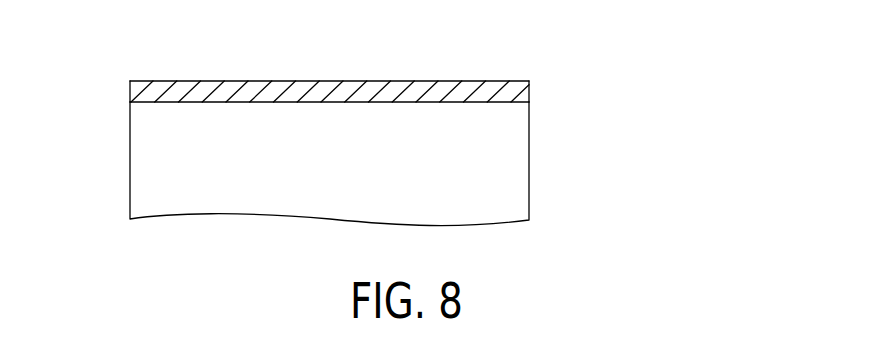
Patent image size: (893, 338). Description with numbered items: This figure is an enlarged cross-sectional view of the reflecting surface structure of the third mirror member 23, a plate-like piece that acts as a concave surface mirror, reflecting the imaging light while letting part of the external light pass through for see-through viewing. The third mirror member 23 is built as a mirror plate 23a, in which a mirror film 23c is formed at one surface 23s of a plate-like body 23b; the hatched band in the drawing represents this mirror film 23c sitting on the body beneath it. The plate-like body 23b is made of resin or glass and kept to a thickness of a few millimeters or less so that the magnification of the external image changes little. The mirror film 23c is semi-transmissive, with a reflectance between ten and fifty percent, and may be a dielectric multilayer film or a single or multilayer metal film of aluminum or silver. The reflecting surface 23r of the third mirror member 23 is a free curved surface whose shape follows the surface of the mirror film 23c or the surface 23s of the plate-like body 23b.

The third mirror member 23 is at (120, 82).
The mirror plate 23a is at (410, 121).
The plate-like body 23b is at (515, 168).
The mirror film 23c is at (513, 97).
The reflecting surface 23r is at (329, 81).
The surface 23s is at (432, 102).